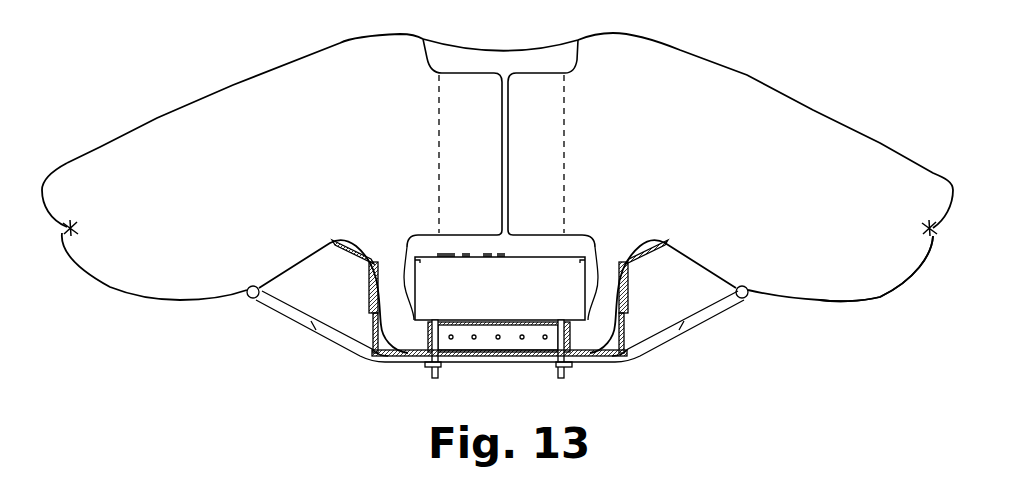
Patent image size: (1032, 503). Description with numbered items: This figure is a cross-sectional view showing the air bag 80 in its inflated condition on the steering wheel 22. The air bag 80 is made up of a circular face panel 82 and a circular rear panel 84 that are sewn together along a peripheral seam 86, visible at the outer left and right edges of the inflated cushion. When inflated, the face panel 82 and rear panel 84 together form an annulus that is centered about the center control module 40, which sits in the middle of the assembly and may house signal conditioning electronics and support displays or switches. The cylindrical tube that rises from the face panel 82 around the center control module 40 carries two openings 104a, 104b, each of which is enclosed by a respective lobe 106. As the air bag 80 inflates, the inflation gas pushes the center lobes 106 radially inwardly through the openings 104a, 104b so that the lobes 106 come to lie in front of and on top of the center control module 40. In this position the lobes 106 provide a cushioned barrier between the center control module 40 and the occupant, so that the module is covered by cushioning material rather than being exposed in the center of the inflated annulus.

The air bag 80 is at (150, 106).
The face panel 82 is at (236, 108).
The rear panel 84 is at (812, 292).
The peripheral seam 86 is at (72, 227).
The lobe 106 is at (452, 97).
The opening 104a is at (437, 202).
The opening 104b is at (567, 210).
The center control module 40 is at (522, 302).
The steering wheel 22 is at (287, 322).